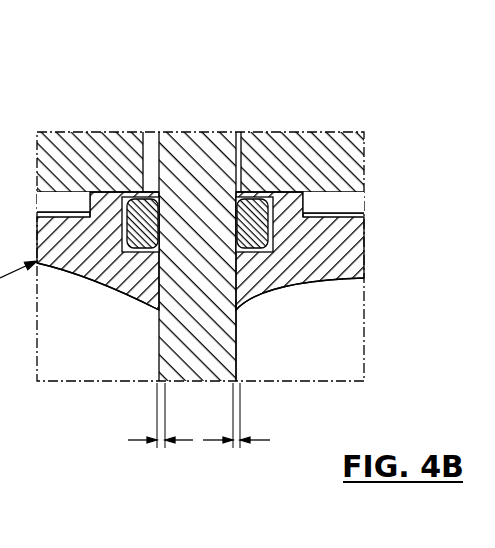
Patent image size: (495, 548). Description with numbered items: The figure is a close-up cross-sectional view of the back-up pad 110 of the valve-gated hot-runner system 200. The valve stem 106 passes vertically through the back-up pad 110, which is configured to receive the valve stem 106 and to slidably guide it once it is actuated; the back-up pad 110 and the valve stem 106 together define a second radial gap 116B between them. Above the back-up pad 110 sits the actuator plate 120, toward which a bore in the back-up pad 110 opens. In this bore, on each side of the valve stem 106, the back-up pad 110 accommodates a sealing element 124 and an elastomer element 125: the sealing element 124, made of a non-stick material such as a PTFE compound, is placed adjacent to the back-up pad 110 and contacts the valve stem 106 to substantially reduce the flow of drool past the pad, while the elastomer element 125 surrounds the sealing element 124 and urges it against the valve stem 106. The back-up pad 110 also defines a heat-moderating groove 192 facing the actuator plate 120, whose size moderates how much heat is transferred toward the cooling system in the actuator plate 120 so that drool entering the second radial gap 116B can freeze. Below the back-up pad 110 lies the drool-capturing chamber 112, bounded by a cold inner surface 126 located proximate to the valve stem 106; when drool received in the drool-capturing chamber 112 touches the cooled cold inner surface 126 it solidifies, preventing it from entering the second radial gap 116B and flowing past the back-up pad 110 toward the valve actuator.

The valve-gated hot-runner system 200 is at (194, 108).
The elastomer element 125 is at (140, 203).
The actuator plate 120 is at (55, 176).
The valve stem 106 is at (180, 178).
The heat-moderating groove 192 is at (350, 203).
The back-up pad 110 is at (285, 261).
The sealing element 124 is at (137, 248).
The drool-capturing chamber 112 is at (55, 337).
The cold inner surface 126 is at (263, 310).
The second radial gap 116B is at (162, 448).